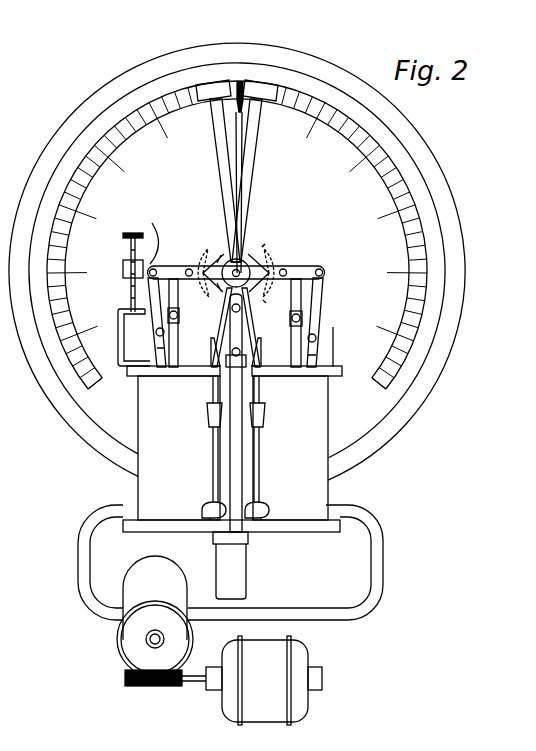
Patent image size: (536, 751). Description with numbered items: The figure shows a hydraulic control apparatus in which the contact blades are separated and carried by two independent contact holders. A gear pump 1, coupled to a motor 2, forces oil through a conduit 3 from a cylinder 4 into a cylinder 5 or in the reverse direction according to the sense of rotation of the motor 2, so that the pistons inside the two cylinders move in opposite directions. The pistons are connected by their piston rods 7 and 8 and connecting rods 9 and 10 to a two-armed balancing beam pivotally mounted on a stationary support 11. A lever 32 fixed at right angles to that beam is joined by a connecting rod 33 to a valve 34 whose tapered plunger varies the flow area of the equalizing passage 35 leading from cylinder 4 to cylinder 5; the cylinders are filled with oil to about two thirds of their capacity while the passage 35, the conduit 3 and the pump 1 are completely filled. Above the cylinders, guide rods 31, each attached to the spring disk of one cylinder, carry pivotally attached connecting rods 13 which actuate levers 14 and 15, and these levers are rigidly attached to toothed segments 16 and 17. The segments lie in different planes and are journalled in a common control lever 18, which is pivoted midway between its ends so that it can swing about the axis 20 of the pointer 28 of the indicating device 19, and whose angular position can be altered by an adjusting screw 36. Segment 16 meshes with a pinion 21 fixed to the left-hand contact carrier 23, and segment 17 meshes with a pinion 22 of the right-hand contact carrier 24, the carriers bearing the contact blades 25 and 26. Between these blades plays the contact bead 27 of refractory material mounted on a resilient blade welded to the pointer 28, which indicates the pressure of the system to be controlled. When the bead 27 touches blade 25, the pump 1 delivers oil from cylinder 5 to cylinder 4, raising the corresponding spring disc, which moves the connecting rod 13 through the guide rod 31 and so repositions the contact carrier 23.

The gear pump 1 is at (144, 578).
The motor 2 is at (276, 718).
The conduit 3 is at (78, 560).
The cylinder 4 is at (152, 444).
The cylinder 5 is at (313, 443).
The piston rod 7 is at (178, 340).
The piston rod 8 is at (292, 349).
The connecting rod 9 is at (179, 311).
The connecting rod 10 is at (300, 300).
The stationary support 11 is at (158, 686).
The connecting rod 13 is at (154, 318).
The lever 14 is at (176, 265).
The lever 15 is at (308, 270).
The toothed segment 16 is at (214, 252).
The toothed segment 17 is at (280, 256).
The control lever 18 is at (154, 234).
The indicating device 19 is at (438, 188).
The axis 20 is at (230, 291).
The pinion 21 is at (264, 246).
The pinion 22 is at (263, 245).
The contact carrier 23 is at (222, 182).
The contact carrier 24 is at (262, 186).
The contact blade 25 is at (216, 86).
The contact blade 26 is at (264, 88).
The contact bead 27 is at (243, 90).
The pointer 28 is at (236, 125).
The guide rod 31 is at (158, 347).
The lever 32 is at (244, 306).
The connecting rod 33 is at (240, 336).
The valve 34 is at (249, 352).
The equalizing passage 35 is at (253, 519).
The adjusting screw 36 is at (128, 246).